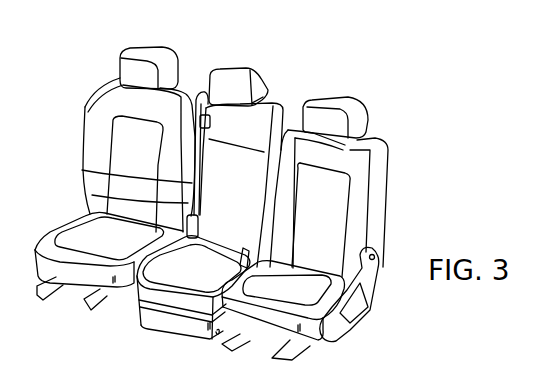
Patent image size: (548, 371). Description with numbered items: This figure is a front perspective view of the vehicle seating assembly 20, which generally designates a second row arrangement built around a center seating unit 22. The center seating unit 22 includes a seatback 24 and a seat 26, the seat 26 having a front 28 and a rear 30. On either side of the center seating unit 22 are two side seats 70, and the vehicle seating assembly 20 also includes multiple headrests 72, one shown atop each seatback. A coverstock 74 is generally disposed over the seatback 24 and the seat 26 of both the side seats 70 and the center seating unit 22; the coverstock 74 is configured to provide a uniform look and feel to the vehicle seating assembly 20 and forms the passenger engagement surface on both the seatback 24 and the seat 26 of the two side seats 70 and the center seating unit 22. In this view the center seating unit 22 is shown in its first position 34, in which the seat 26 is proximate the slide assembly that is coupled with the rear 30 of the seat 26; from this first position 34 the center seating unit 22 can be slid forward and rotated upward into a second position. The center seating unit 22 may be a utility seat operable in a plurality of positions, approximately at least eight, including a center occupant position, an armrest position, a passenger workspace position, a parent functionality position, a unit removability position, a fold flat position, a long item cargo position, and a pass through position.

The vehicle seating assembly 20 is at (386, 57).
The second row center seating unit 22 is at (213, 208).
The seatback 24 is at (110, 176).
The seat 26 is at (203, 262).
The front 28 is at (157, 276).
The rear 30 is at (308, 97).
The first position 34 is at (289, 54).
The side seats 70 is at (93, 106).
The headrests 72 is at (228, 70).
The coverstock 74 is at (239, 172).